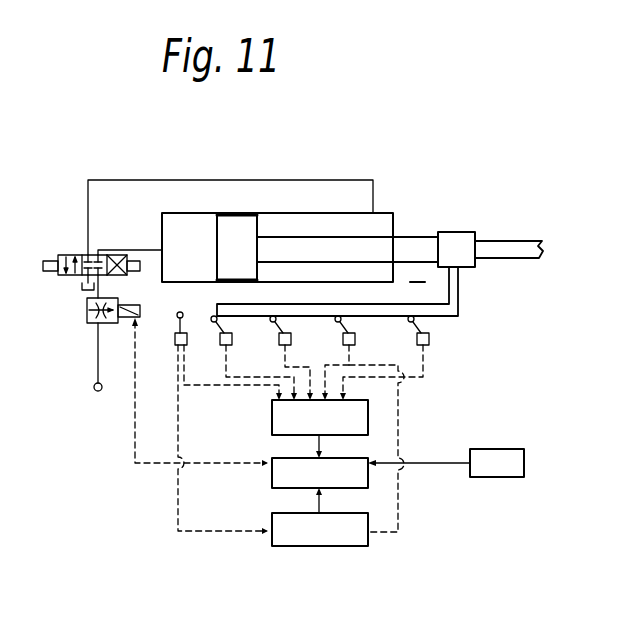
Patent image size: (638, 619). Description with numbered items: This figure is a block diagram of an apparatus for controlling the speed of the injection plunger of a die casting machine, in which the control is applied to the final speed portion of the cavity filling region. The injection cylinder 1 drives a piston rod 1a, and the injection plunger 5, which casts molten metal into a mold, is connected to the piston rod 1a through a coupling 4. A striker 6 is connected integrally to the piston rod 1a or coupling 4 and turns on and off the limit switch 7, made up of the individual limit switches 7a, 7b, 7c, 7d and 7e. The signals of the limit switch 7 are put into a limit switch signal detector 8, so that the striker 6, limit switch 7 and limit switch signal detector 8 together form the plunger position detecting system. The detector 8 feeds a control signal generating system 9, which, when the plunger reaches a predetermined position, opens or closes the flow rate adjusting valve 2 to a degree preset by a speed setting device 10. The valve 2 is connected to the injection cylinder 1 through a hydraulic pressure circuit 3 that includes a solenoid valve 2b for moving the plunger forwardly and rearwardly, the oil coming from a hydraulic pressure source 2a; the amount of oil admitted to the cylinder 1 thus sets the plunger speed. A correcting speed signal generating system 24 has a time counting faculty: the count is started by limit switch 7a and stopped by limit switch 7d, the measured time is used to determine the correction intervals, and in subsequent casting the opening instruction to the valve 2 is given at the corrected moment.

The injection cylinder 1 is at (385, 213).
The piston rod 1a is at (416, 284).
The flow rate adjusting valve 2 is at (87, 311).
The hydraulic pressure source 2a is at (97, 392).
The solenoid valve 2b is at (62, 255).
The hydraulic pressure circuit 3 is at (330, 180).
The coupling 4 is at (458, 232).
The injection plunger 5 is at (518, 241).
The striker 6 is at (458, 295).
The limit switch 7 is at (325, 423).
The limit switch 7a is at (175, 339).
The limit switch 7b is at (220, 340).
The limit switch 7c is at (279, 340).
The limit switch 7d is at (343, 340).
The limit switch 7e is at (440, 341).
The limit switch signal detector 8 is at (272, 419).
The control signal generating system 9 is at (272, 482).
The speed setting device 10 is at (511, 452).
The correcting speed signal generating system 24 is at (272, 546).